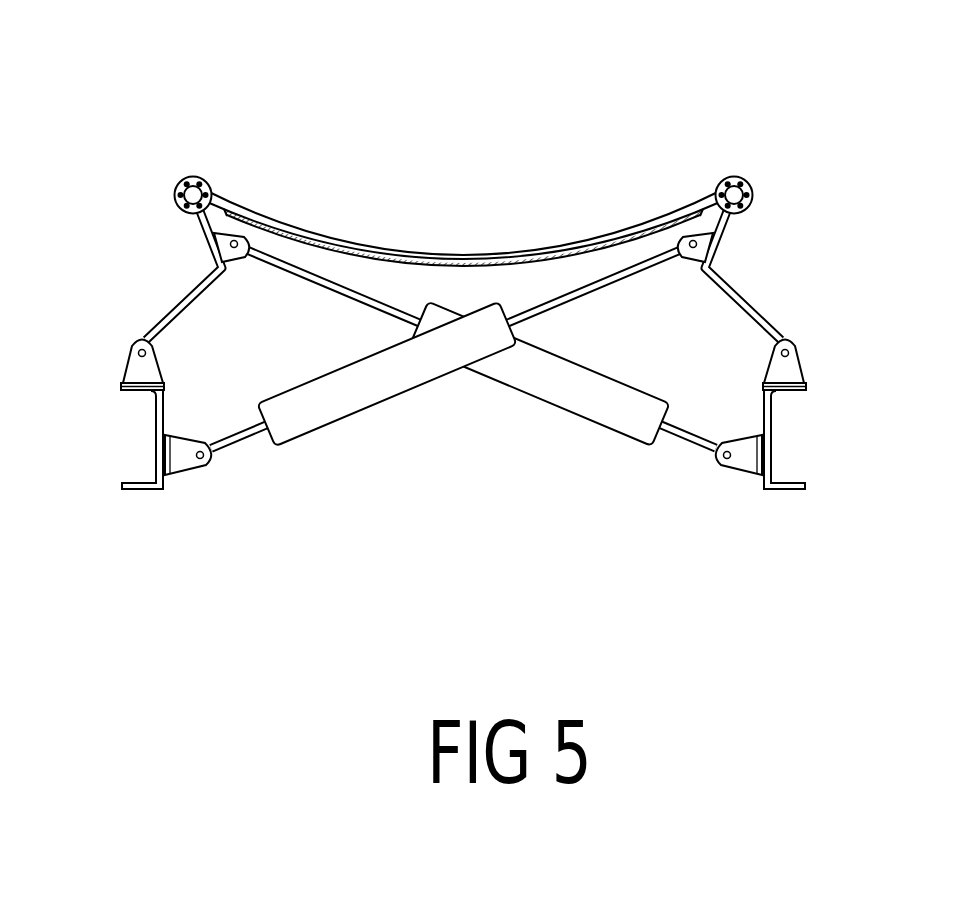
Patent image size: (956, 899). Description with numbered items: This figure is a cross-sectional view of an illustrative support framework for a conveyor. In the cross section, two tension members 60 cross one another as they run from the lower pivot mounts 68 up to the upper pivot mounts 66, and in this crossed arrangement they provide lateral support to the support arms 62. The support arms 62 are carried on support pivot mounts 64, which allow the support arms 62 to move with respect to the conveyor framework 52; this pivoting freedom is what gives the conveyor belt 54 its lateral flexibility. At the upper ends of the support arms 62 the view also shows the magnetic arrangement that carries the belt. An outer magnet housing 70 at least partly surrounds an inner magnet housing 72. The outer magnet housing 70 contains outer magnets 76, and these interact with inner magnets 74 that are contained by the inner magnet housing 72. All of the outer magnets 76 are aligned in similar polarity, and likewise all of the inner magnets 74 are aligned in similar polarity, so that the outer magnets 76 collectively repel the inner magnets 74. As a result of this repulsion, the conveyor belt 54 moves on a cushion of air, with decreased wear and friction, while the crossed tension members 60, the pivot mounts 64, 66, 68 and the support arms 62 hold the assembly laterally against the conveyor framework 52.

The conveyor framework 52 is at (156, 482).
The conveyor belt 54 is at (447, 262).
The tension members 60 is at (285, 432).
The support arms 62 is at (204, 288).
The support pivot mounts 64 is at (141, 373).
The upper pivot mounts 66 is at (223, 246).
The lower pivot mounts 68 is at (178, 458).
The outer magnet housing 70 is at (205, 182).
The inner magnet housing 72 is at (183, 190).
The inner magnets 74 is at (198, 196).
The outer magnets 76 is at (190, 183).